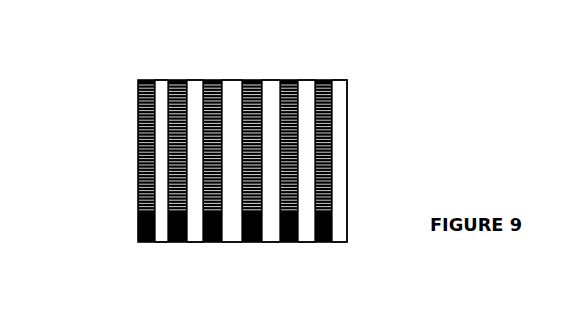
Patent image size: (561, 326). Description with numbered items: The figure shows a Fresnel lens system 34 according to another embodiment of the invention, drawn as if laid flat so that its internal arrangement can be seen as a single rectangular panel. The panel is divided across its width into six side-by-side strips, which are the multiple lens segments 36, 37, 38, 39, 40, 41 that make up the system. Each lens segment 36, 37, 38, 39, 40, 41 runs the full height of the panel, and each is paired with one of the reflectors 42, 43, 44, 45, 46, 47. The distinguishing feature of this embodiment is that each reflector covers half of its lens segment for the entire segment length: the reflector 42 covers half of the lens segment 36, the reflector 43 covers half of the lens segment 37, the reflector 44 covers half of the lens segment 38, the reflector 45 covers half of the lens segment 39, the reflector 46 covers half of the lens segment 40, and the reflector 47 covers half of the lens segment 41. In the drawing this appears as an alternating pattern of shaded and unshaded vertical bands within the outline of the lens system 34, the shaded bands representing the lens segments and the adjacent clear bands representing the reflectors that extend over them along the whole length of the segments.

The Fresnel lens system 34 is at (121, 143).
The lens segment 36 is at (142, 242).
The lens segment 37 is at (173, 242).
The lens segment 38 is at (210, 242).
The lens segment 39 is at (248, 242).
The lens segment 40 is at (287, 242).
The lens segment 41 is at (320, 242).
The reflector 42 is at (160, 83).
The reflector 43 is at (198, 86).
The reflector 44 is at (228, 88).
The reflector 45 is at (272, 88).
The reflector 46 is at (307, 88).
The reflector 47 is at (342, 88).